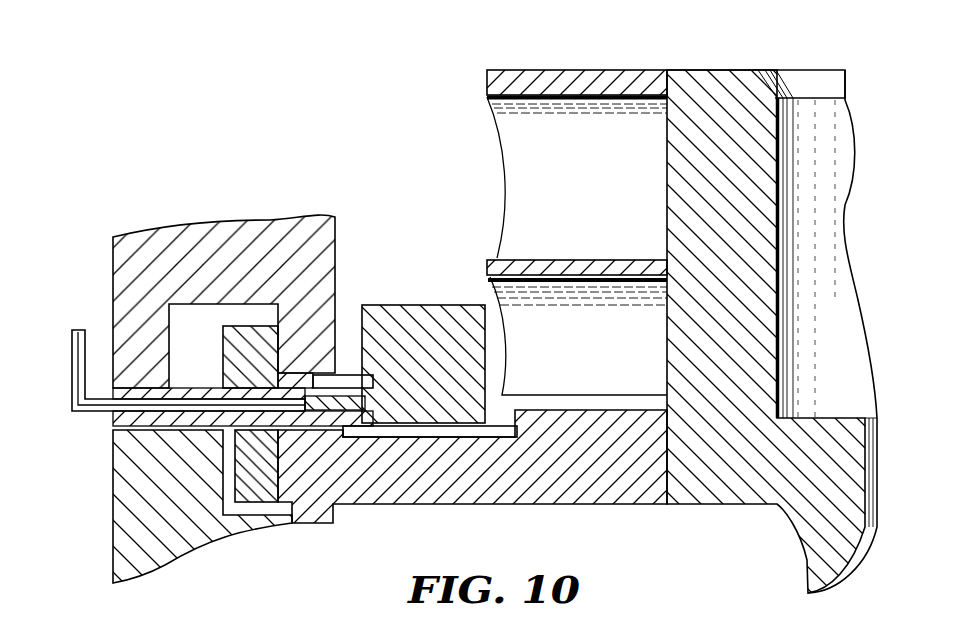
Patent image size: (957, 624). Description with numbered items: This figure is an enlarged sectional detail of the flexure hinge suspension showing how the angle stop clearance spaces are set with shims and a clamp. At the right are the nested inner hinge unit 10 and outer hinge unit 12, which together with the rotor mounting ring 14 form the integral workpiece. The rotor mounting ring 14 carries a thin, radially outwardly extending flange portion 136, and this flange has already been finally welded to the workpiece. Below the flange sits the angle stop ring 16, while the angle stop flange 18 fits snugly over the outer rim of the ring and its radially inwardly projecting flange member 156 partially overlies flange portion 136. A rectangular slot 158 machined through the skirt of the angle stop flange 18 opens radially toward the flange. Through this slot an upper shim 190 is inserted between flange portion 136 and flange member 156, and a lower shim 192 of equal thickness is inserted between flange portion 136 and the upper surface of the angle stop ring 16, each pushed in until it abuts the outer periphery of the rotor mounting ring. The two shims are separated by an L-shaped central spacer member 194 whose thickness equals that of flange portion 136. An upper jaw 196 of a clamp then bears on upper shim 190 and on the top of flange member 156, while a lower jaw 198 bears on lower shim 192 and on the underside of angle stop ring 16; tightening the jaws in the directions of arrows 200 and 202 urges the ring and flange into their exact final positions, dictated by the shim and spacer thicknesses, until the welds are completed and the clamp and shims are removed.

The inner hinge unit 10 is at (747, 104).
The outer hinge unit 12 is at (618, 70).
The rotor mounting ring 14 is at (440, 314).
The angle stop ring 16 is at (437, 490).
The angle stop flange 18 is at (262, 481).
The flange portion 136 is at (323, 419).
The flange member 156 is at (298, 382).
The slot 158 is at (236, 394).
The upper shim 190 is at (127, 393).
The lower shim 192 is at (122, 430).
The L-shaped central spacer member 194 is at (72, 332).
The upper jaw 196 is at (128, 268).
The lower jaw 198 is at (121, 513).
The arrow 200 is at (220, 200).
The arrow 202 is at (220, 578).